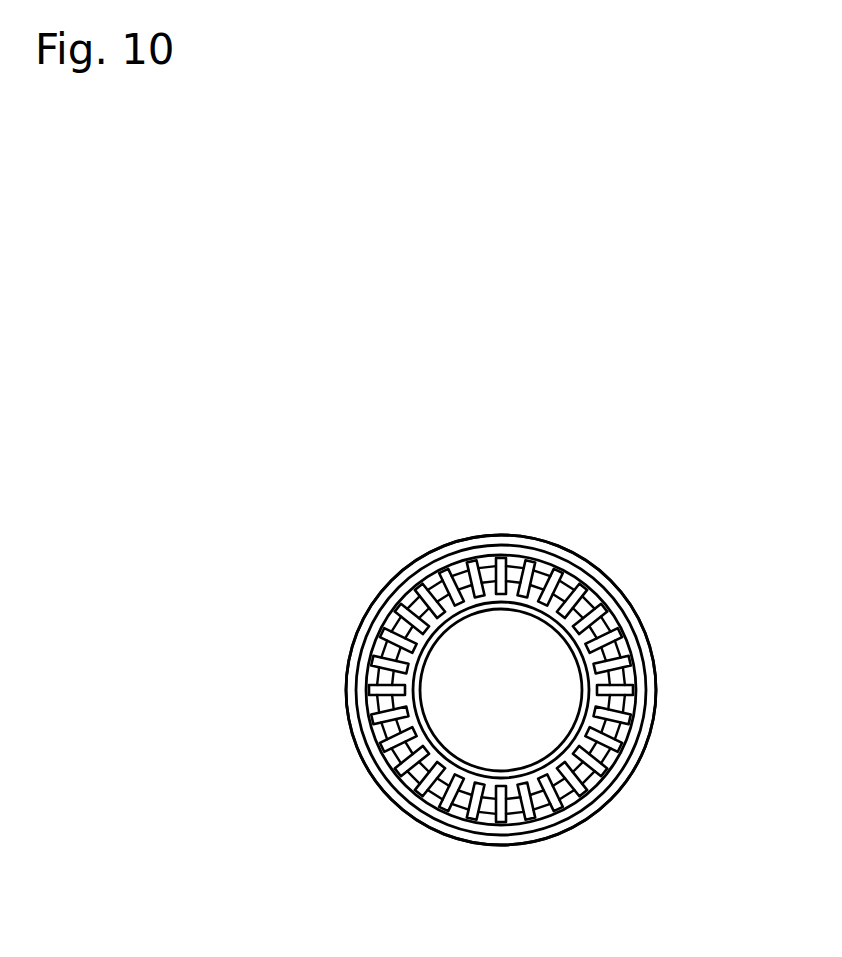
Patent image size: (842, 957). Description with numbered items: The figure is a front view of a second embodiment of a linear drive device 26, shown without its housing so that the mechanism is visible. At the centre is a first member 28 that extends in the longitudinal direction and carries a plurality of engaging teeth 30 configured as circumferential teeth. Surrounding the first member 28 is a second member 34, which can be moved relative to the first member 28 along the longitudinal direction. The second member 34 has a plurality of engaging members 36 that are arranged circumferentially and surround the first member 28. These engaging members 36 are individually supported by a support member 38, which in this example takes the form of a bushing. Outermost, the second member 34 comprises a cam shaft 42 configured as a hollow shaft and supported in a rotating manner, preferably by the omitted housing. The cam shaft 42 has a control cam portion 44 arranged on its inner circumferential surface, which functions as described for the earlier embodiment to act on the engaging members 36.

The linear drive device 26 is at (302, 495).
The second member 34 is at (431, 485).
The cam shaft 42 is at (404, 572).
The control cam portion 44 is at (365, 695).
The engaging members 36 is at (537, 567).
The support member 38 is at (488, 568).
The engaging teeth 30 is at (527, 733).
The first member 28 is at (553, 672).